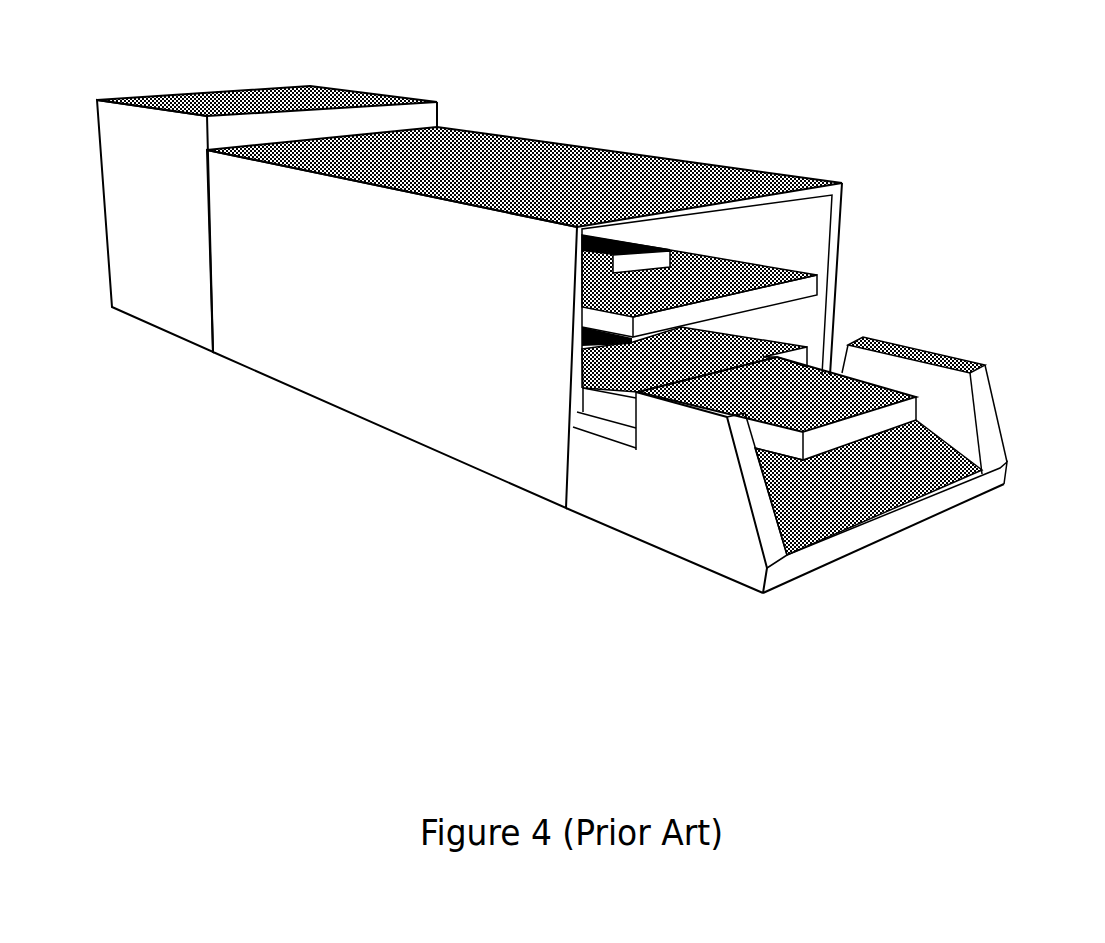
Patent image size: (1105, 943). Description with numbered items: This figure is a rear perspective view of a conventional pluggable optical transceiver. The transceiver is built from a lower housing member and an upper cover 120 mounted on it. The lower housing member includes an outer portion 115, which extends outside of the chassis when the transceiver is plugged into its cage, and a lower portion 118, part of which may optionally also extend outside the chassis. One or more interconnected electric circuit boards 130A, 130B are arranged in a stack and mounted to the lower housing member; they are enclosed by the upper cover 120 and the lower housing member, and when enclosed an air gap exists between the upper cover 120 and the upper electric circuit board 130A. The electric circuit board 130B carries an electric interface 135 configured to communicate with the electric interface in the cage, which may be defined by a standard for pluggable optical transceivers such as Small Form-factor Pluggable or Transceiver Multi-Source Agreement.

The outer portion 115 is at (179, 203).
The upper cover 120 is at (409, 306).
The lower portion 118 is at (661, 510).
The upper electric circuit board 130A is at (752, 273).
The electric circuit board 130B is at (740, 343).
The electric interface 135 is at (876, 437).